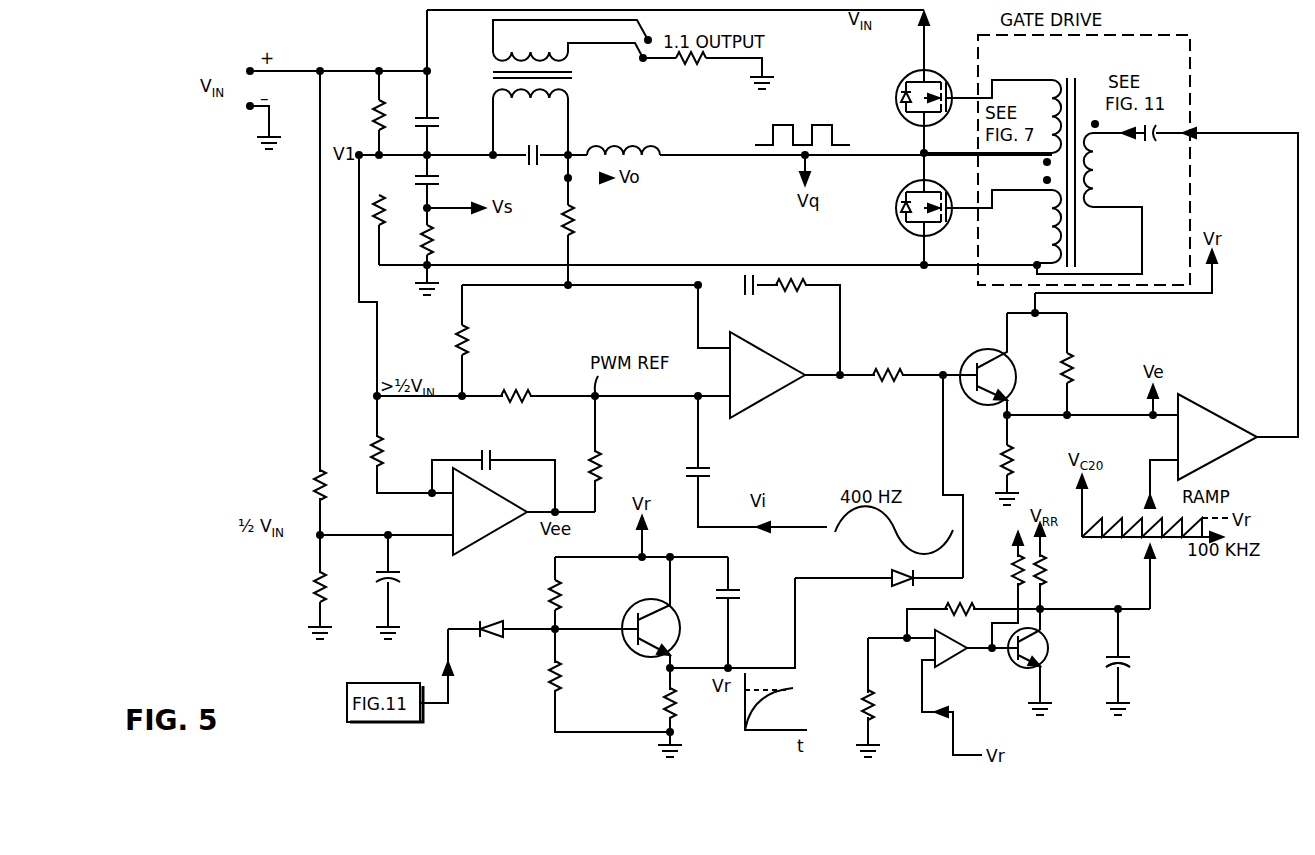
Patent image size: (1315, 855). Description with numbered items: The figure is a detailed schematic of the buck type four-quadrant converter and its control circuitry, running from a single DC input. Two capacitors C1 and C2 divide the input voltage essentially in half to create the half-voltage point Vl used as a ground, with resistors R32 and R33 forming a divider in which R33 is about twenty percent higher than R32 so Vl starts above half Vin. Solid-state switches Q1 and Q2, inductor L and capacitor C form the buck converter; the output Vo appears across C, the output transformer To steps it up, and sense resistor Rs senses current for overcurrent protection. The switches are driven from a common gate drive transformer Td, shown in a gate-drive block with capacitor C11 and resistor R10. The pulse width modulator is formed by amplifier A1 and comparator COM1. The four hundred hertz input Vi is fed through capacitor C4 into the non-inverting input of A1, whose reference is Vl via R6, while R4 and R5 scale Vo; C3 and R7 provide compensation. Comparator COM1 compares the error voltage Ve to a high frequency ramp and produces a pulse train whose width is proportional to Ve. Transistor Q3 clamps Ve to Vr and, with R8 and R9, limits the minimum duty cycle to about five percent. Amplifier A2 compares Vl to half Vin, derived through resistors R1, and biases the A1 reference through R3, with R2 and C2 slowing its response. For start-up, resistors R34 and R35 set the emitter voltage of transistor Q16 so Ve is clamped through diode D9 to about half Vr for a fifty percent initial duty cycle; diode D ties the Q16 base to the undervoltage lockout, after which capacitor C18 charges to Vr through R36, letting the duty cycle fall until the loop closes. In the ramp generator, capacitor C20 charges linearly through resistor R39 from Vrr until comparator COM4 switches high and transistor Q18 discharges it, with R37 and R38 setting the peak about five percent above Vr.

The resistor R32 is at (359, 107).
The capacitor C1 is at (439, 124).
The resistor R33 is at (374, 206).
The capacitor C2 is at (469, 316).
The sense resistor Rs is at (441, 240).
The output transformer To is at (548, 87).
The resistor R10 is at (774, 232).
The capacitor C is at (532, 151).
The inductor L is at (623, 133).
The resistor R4 is at (587, 220).
The solid-state switch Q1 is at (909, 98).
The solid-state switch Q2 is at (908, 212).
The gate drive transformer Td is at (1072, 158).
The capacitor C11 is at (1155, 147).
The capacitor C3 is at (744, 292).
The resistor R7 is at (791, 294).
The resistor R5 is at (478, 339).
The resistor R6 is at (516, 380).
The amplifier A1 is at (767, 375).
The resistor R2 is at (394, 447).
The amplifier A2 is at (490, 511).
The resistor R3 is at (612, 466).
The capacitor C4 is at (713, 465).
The transistor Q3 is at (979, 363).
The resistor R8 is at (1089, 369).
The resistor R9 is at (1000, 453).
The comparator COM1 is at (1217, 437).
The resistor R1 is at (308, 529).
The diode D is at (491, 616).
The resistor R34 is at (565, 588).
The resistor R35 is at (563, 675).
The transistor Q16 is at (671, 607).
The capacitor C18 is at (746, 600).
The resistor R36 is at (694, 712).
The diode D9 is at (889, 569).
The resistor R38 is at (843, 696).
The resistor R37 is at (984, 577).
The resistor R39 is at (1062, 575).
The comparator COM4 is at (964, 660).
The transistor Q18 is at (1047, 650).
The capacitor C20 is at (1142, 667).